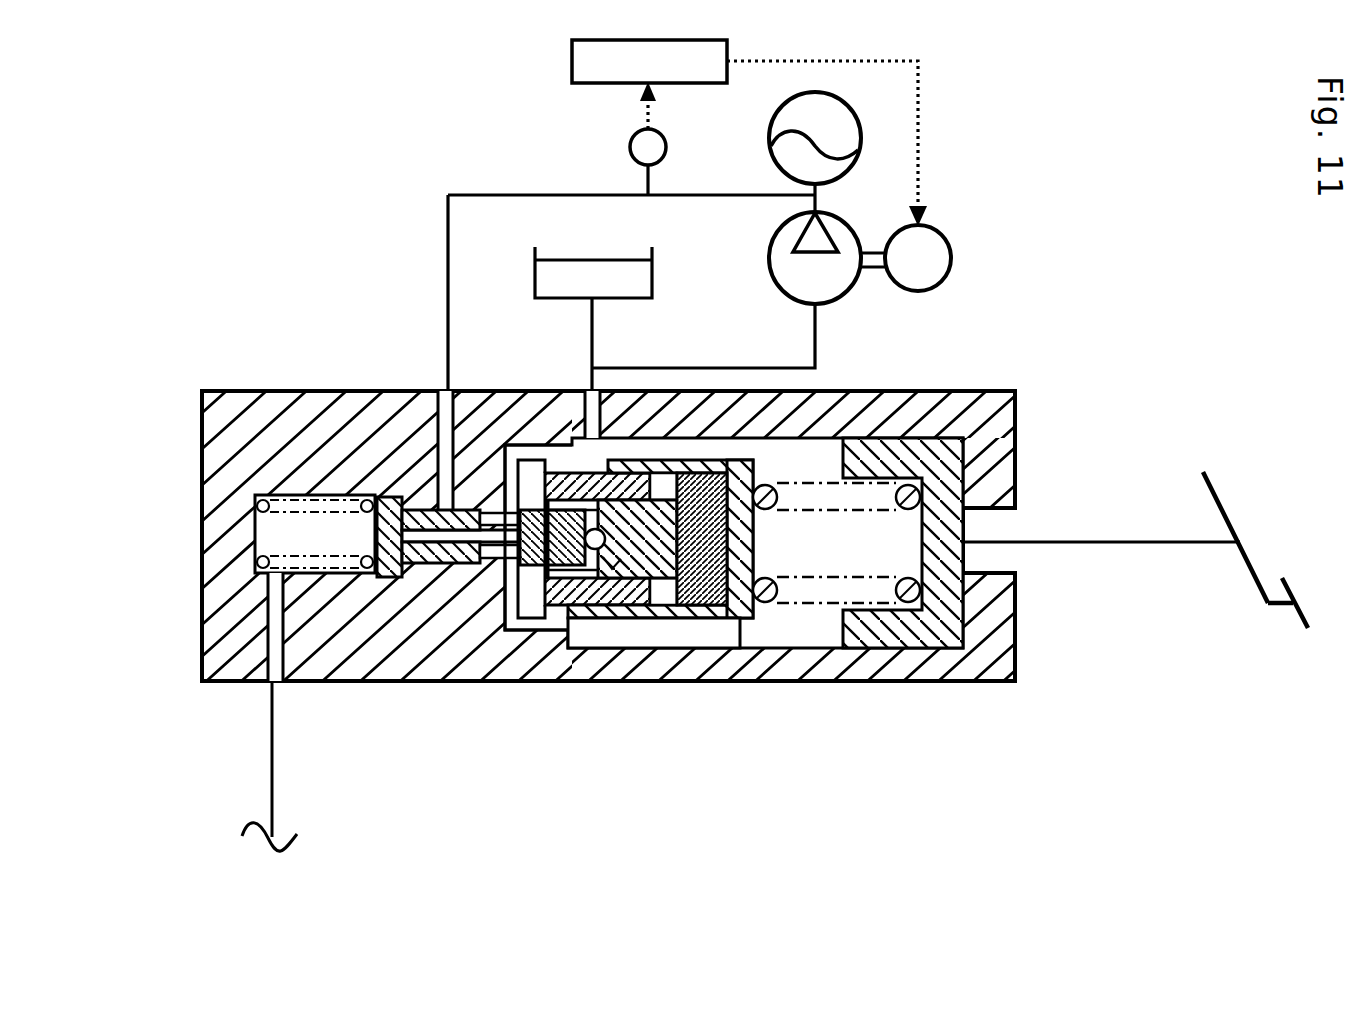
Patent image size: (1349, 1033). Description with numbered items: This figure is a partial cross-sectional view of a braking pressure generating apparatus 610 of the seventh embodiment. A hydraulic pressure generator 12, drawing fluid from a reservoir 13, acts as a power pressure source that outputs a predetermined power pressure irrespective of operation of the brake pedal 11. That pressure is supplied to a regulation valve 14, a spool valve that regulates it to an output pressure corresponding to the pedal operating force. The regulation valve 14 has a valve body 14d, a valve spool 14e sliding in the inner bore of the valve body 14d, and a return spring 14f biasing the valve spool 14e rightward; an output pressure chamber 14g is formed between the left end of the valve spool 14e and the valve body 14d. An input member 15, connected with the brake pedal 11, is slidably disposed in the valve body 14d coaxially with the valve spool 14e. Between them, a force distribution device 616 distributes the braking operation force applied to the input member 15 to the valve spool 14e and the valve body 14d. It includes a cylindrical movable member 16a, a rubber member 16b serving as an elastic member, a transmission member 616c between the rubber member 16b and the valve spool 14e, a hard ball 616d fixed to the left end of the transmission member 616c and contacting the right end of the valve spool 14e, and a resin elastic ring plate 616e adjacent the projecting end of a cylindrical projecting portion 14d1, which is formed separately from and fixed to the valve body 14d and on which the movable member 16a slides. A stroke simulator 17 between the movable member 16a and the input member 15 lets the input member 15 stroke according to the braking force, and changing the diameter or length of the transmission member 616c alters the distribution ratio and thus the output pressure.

The braking pressure generating apparatus 610 is at (326, 154).
The brake pedal 11 is at (1268, 603).
The hydraulic pressure generator 12 is at (970, 134).
The reservoir 13 is at (653, 285).
The regulation valve 14 is at (250, 383).
The valve body 14d is at (305, 449).
The cylindrical projecting portion 14d1 is at (588, 475).
The valve spool 14e is at (415, 500).
The return spring 14f is at (277, 533).
The output pressure chamber 14g is at (255, 572).
The input member 15 is at (940, 637).
The cylindrical movable member 16a is at (747, 618).
The rubber member 16b is at (695, 620).
The stroke simulator 17 is at (905, 485).
The force distribution device 616 is at (635, 636).
The transmission member 616c is at (568, 642).
The ball 616d is at (505, 632).
The elastic ring plate 616e is at (642, 618).